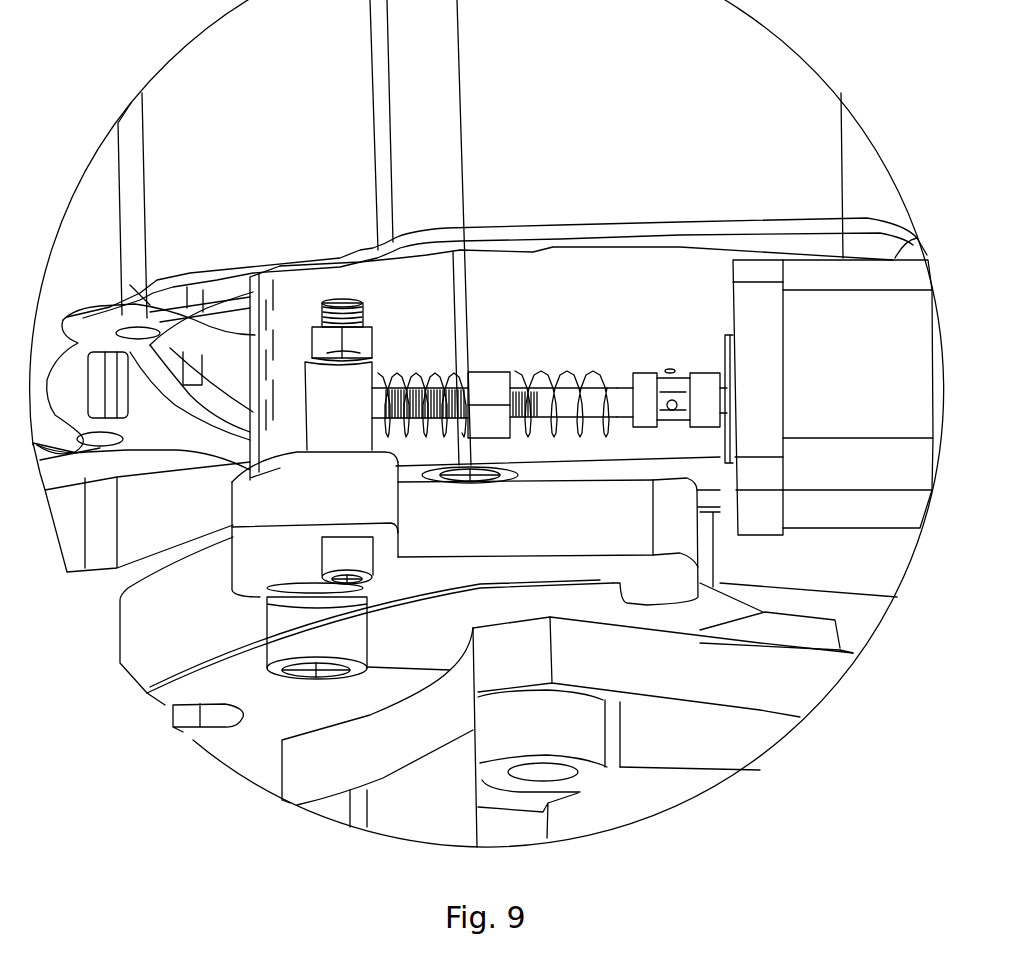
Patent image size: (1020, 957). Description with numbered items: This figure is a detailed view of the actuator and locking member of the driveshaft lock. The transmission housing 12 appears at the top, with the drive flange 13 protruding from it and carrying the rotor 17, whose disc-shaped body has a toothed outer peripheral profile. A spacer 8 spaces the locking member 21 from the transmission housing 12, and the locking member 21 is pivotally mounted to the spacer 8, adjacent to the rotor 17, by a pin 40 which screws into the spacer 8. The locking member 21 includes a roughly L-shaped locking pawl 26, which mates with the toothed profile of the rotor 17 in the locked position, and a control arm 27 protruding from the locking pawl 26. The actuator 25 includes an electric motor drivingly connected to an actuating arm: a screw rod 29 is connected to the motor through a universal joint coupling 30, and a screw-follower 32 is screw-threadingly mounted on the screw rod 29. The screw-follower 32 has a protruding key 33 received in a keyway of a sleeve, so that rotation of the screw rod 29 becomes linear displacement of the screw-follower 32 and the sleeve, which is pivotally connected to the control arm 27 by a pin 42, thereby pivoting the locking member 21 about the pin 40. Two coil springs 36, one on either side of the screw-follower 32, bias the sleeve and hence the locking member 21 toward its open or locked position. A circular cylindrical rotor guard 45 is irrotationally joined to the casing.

The spacer 8 is at (253, 300).
The transmission housing 12 is at (594, 174).
The drive flange 13 is at (712, 667).
The rotor 17 is at (218, 740).
The locking member 21 is at (491, 537).
The actuator 25 is at (682, 266).
The locking pawl 26 is at (610, 547).
The control arm 27 is at (387, 492).
The screw rod 29 is at (583, 392).
The universal joint coupling 30 is at (676, 360).
The screw-follower 32 is at (487, 366).
The protruding key 33 is at (497, 393).
The coil springs 36 is at (387, 387).
The pin 40 is at (285, 625).
The pin 42 is at (380, 553).
The rotor guard 45 is at (160, 682).